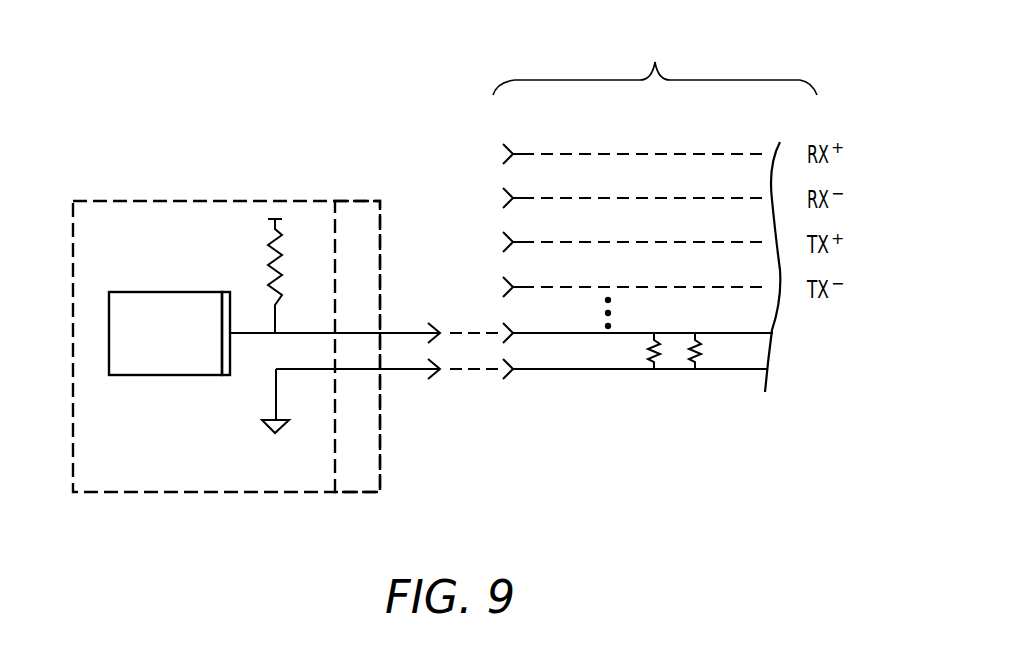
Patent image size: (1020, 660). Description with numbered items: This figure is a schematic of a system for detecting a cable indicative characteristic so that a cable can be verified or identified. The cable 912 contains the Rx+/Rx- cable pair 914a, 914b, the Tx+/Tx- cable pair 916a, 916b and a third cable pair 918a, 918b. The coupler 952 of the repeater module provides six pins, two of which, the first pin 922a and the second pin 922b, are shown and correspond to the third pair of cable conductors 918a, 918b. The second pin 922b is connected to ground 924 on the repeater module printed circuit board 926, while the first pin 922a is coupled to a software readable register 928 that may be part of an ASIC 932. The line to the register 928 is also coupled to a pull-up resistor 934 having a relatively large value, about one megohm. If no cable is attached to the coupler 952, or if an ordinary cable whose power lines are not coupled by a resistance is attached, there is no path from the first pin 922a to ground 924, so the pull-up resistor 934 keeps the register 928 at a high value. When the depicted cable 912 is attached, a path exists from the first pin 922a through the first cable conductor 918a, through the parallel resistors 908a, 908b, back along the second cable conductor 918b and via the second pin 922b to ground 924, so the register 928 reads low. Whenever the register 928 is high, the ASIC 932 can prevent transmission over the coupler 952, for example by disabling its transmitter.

The repeater module printed circuit board 926 is at (122, 201).
The coupler 952 is at (352, 213).
The ASIC 932 is at (108, 327).
The software readable register 928 is at (227, 291).
The pull-up resistor 934 is at (266, 243).
The first pin 922a is at (357, 333).
The second pin 922b is at (363, 370).
The ground 924 is at (276, 392).
The cable 912 is at (655, 62).
The Rx+ cable conductor 914a is at (620, 152).
The Rx- cable conductor 914b is at (658, 196).
The Tx+ cable conductor 916a is at (603, 246).
The Tx- cable conductor 916b is at (623, 288).
The first cable conductor 918a is at (742, 333).
The second cable conductor 918b is at (740, 369).
The first parallel resistor 908a is at (655, 370).
The second parallel resistor 908b is at (698, 370).